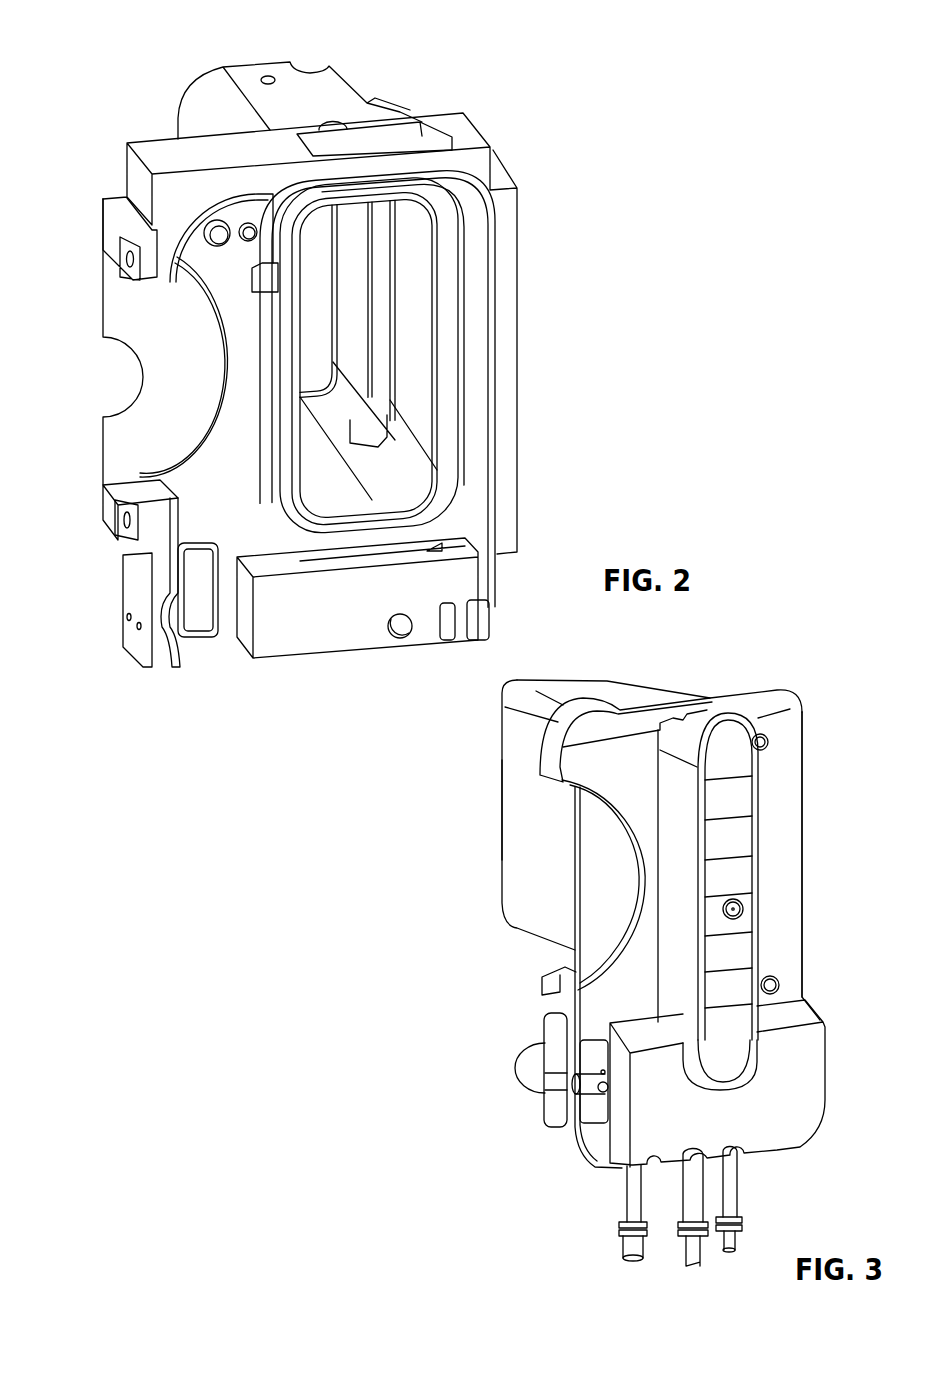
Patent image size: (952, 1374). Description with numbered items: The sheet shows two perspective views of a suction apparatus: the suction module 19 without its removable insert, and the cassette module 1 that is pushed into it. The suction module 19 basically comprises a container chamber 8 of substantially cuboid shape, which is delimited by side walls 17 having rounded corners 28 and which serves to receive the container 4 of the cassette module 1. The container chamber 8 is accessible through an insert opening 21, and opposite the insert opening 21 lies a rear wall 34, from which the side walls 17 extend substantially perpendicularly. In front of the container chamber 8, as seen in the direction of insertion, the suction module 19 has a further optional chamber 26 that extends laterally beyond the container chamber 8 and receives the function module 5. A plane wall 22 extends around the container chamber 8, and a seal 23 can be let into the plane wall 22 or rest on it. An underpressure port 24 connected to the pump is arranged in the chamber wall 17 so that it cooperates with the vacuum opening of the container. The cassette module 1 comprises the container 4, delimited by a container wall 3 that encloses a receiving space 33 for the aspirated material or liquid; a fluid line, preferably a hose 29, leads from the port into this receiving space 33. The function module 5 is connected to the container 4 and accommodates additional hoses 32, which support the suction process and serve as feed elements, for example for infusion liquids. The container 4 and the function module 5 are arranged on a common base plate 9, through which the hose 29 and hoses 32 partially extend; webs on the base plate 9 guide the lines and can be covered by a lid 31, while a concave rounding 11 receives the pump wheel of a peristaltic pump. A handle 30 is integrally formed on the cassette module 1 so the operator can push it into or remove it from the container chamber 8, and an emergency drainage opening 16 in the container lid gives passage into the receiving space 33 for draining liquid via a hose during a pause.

In FIG. 3, the cassette module 1 is at (775, 698).
In FIG. 3, the container wall 3 is at (585, 683).
In FIG. 3, the container 4 is at (520, 873).
In FIG. 3, the function module 5 is at (775, 902).
In FIG. 2, the container chamber 8 is at (400, 493).
In FIG. 3, the base plate 9 is at (553, 722).
In FIG. 3, the concave rounding 11 is at (680, 950).
In FIG. 3, the emergency drainage opening 16 is at (780, 980).
In FIG. 2, the side walls 17 is at (413, 325).
In FIG. 2, the suction module 19 is at (507, 210).
In FIG. 2, the insert opening 21 is at (437, 388).
In FIG. 2, the plane wall 22 is at (237, 525).
In FIG. 2, the seal 23 is at (285, 393).
In FIG. 2, the underpressure port 24 is at (340, 118).
In FIG. 2, the optional chamber 26 is at (477, 273).
In FIG. 2, the rounded corners 28 is at (303, 220).
In FIG. 3, the hose 29 is at (635, 1247).
In FIG. 3, the handle 30 is at (605, 1022).
In FIG. 3, the lid 31 is at (807, 1097).
In FIG. 3, the additional hoses 32 is at (725, 1245).
In FIG. 3, the receiving space 33 is at (520, 812).
In FIG. 2, the rear wall 34 is at (315, 260).